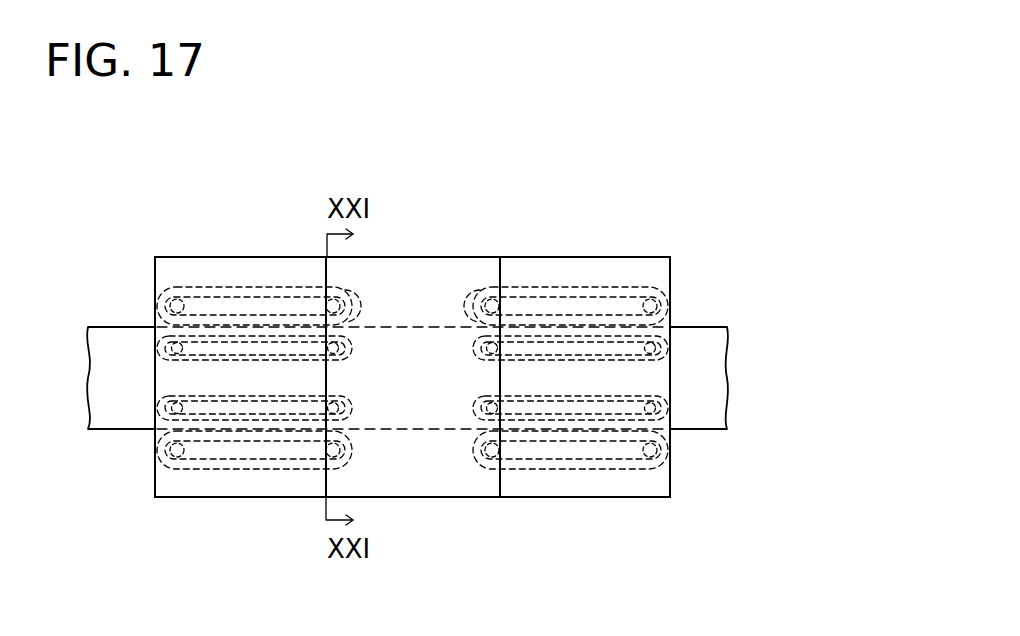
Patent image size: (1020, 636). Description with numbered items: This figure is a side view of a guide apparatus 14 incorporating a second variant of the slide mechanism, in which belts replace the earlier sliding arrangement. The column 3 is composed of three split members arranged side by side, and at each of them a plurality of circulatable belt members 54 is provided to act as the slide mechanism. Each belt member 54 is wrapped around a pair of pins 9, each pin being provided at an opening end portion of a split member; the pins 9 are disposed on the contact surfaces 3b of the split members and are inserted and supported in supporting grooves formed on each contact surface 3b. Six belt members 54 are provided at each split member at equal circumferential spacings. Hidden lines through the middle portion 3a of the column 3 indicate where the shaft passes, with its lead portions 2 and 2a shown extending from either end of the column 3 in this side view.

The lead 2 is at (113, 325).
The lead 2a is at (690, 326).
The column 3 is at (523, 233).
The middle portion of package body 3a is at (476, 429).
The contact surface 3b is at (500, 275).
The pin 9 is at (180, 454).
The semiconductor device 14 is at (499, 182).
The belt member 54 is at (242, 287).